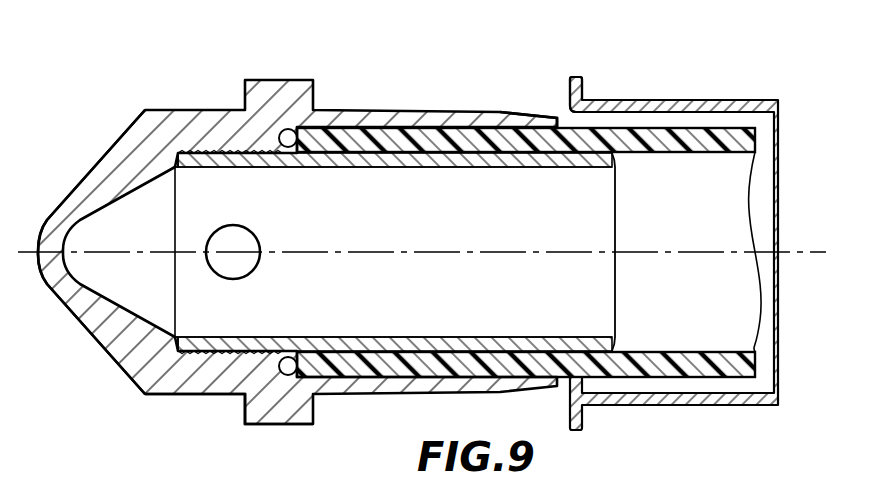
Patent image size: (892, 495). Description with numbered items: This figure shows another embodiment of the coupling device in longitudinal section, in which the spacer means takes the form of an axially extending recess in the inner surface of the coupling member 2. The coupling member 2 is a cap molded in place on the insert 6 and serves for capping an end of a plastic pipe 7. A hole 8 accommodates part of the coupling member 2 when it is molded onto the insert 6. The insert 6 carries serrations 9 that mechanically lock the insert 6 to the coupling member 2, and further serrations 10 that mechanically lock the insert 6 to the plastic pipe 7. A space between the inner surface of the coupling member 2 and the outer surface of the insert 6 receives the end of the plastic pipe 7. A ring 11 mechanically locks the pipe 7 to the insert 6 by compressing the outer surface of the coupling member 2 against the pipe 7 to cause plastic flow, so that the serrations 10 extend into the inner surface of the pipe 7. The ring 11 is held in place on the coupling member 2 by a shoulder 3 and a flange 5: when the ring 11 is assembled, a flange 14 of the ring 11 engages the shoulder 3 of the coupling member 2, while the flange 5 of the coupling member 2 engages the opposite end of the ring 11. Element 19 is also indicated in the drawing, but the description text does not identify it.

The coupling member 2 is at (100, 340).
The shoulder 3 is at (253, 98).
The flange 5 is at (546, 115).
The insert 6 is at (615, 233).
The plastic pipe 7 is at (656, 153).
The hole 8 is at (224, 236).
The serrations 9 is at (165, 395).
The serrations 10 is at (352, 167).
The ring 11 is at (664, 101).
The flange 14 is at (585, 78).
The inner sleeve 19 is at (280, 165).